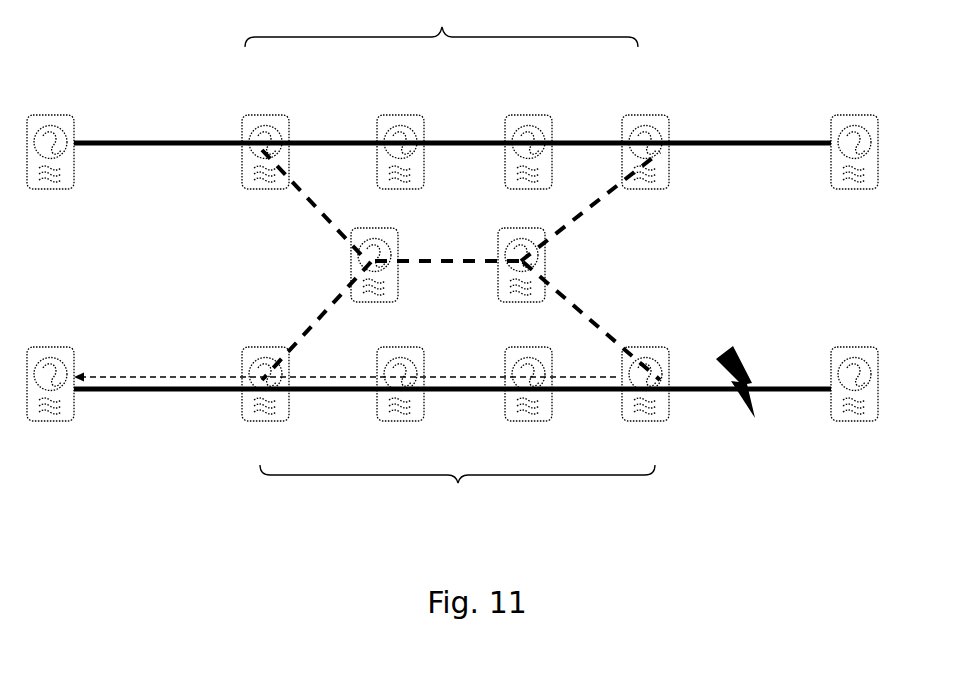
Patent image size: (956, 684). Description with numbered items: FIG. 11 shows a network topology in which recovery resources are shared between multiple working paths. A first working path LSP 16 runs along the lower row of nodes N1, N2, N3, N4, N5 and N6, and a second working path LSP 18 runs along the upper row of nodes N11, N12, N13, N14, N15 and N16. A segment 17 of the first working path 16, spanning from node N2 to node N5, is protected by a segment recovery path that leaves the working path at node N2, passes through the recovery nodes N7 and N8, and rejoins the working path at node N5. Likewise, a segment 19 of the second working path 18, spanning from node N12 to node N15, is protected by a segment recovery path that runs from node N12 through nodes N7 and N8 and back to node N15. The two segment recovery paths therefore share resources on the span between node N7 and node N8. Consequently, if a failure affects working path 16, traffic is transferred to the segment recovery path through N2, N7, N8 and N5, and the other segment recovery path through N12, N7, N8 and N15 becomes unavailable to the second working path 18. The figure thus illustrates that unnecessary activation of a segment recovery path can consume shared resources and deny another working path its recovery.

The first working path LSP 16 is at (157, 390).
The segment of the first working path 17 is at (457, 490).
The second working path LSP 18 is at (137, 142).
The segment of the second working path 19 is at (441, 23).
The node N1 is at (50, 398).
The node N2 is at (265, 398).
The node N3 is at (400, 398).
The node N4 is at (528, 398).
The node N5 is at (645, 398).
The node N6 is at (854, 398).
The node N7 is at (390, 269).
The node N8 is at (505, 256).
The node N11 is at (50, 134).
The node N12 is at (265, 134).
The node N13 is at (400, 134).
The node N14 is at (528, 134).
The node N15 is at (645, 134).
The node N16 is at (854, 134).